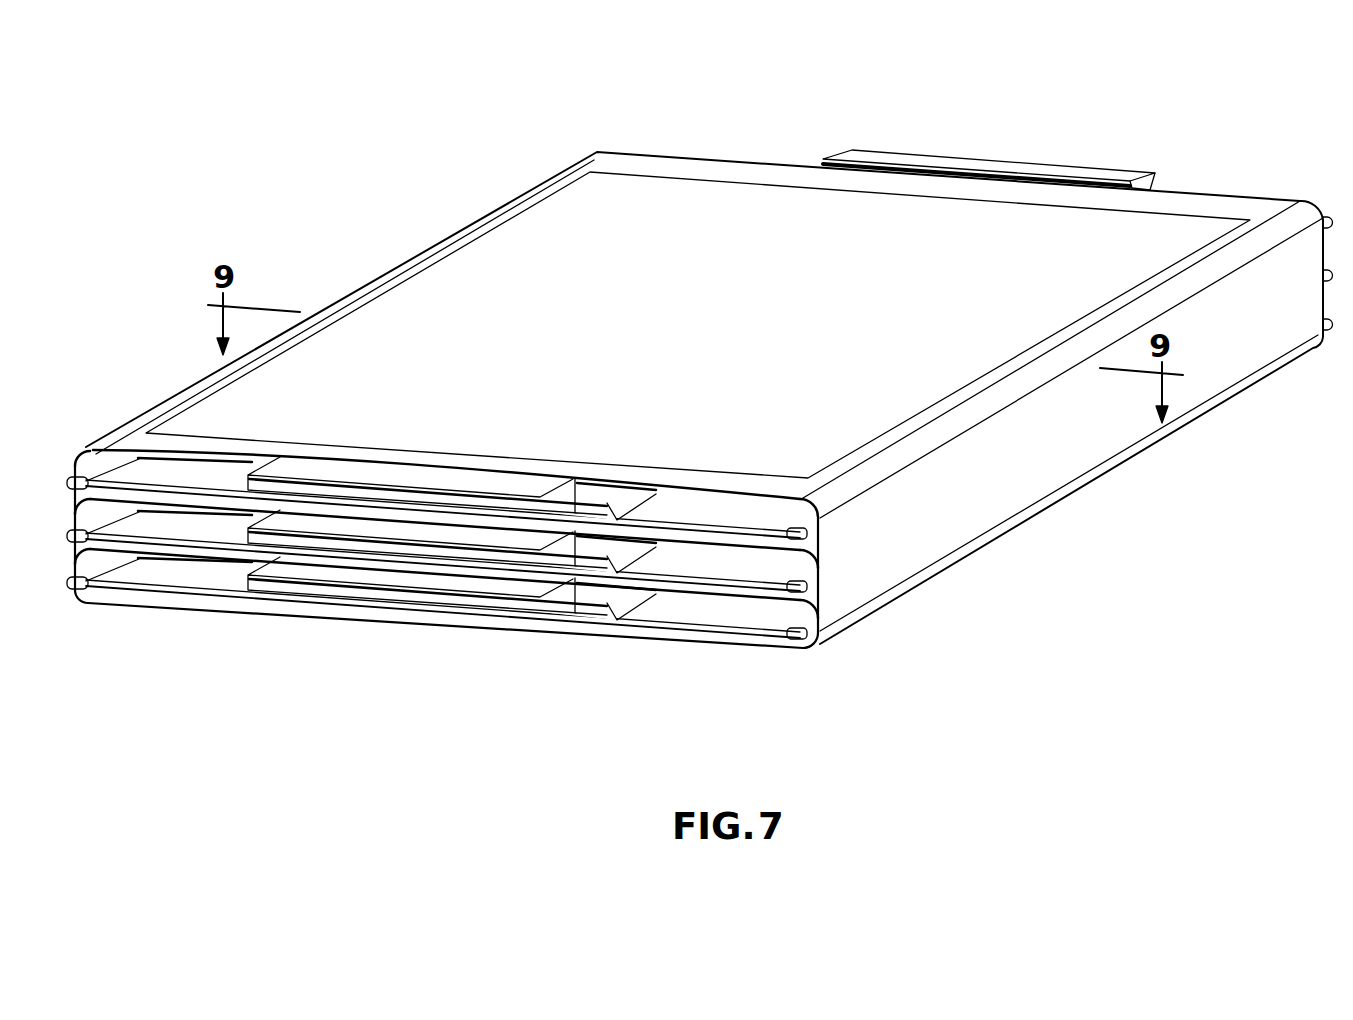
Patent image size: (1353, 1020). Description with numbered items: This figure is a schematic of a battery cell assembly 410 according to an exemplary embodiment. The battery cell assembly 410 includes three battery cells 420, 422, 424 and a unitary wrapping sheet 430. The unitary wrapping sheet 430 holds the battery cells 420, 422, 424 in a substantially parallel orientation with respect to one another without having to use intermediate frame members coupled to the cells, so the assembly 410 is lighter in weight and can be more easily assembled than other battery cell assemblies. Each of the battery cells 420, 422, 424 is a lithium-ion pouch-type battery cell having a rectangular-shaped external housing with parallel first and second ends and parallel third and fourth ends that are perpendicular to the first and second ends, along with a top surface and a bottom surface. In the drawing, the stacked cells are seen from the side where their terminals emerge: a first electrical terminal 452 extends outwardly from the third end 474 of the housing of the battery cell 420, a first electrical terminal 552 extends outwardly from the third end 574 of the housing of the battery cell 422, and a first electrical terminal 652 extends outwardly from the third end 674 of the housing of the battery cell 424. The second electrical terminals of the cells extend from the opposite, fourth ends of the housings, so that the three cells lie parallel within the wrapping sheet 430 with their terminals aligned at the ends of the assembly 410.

The battery cell assembly 410 is at (987, 126).
The unitary wrapping sheet 430 is at (1192, 232).
The battery cell 420 is at (128, 572).
The battery cell 422 is at (172, 521).
The battery cell 424 is at (230, 476).
The first electrical terminal 452 is at (328, 567).
The first electrical terminal 552 is at (422, 523).
The first electrical terminal 652 is at (502, 478).
The third end 474 is at (668, 612).
The third end 574 is at (692, 565).
The third end 674 is at (748, 516).